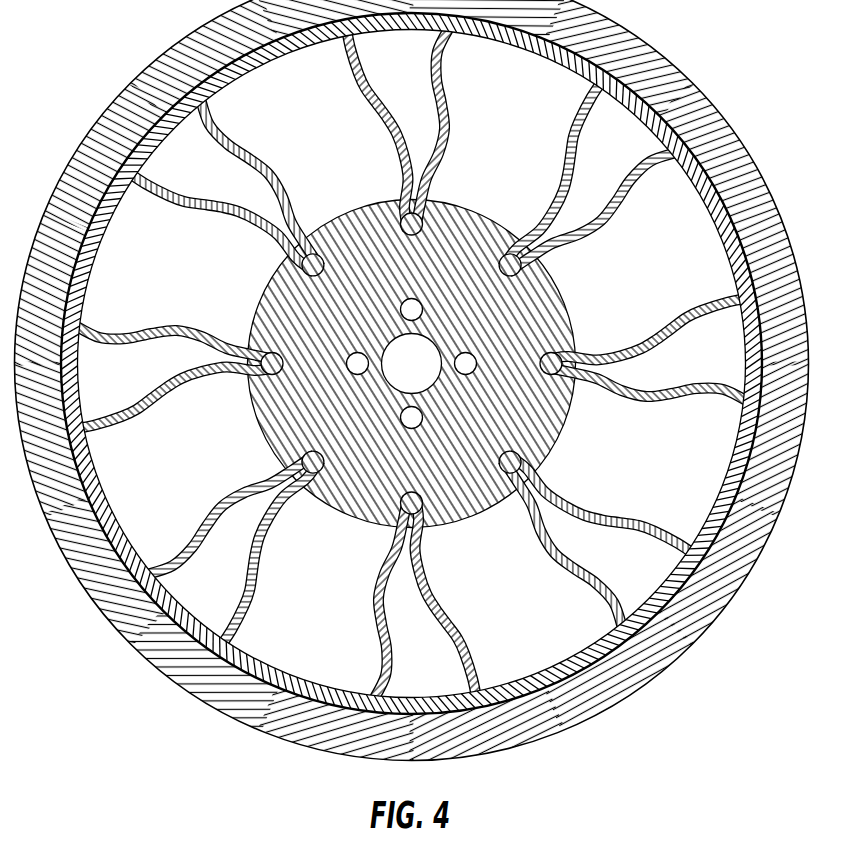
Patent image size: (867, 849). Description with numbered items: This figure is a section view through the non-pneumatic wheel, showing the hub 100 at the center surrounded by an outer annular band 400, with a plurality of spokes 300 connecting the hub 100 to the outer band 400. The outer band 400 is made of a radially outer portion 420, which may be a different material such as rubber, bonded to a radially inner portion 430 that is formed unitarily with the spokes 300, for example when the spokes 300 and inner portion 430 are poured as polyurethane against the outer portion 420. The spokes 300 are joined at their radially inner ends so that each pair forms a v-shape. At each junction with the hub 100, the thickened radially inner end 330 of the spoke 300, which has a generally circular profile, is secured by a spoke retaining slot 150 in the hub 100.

The hub 100 is at (540, 415).
The spoke retaining slot 150 is at (510, 253).
The spokes 300 is at (443, 118).
The thickened radially inner end 330 is at (523, 265).
The outer annular band 400 is at (411, 380).
The radially outer portion 420 is at (678, 90).
The radially inner portion 430 is at (507, 30).